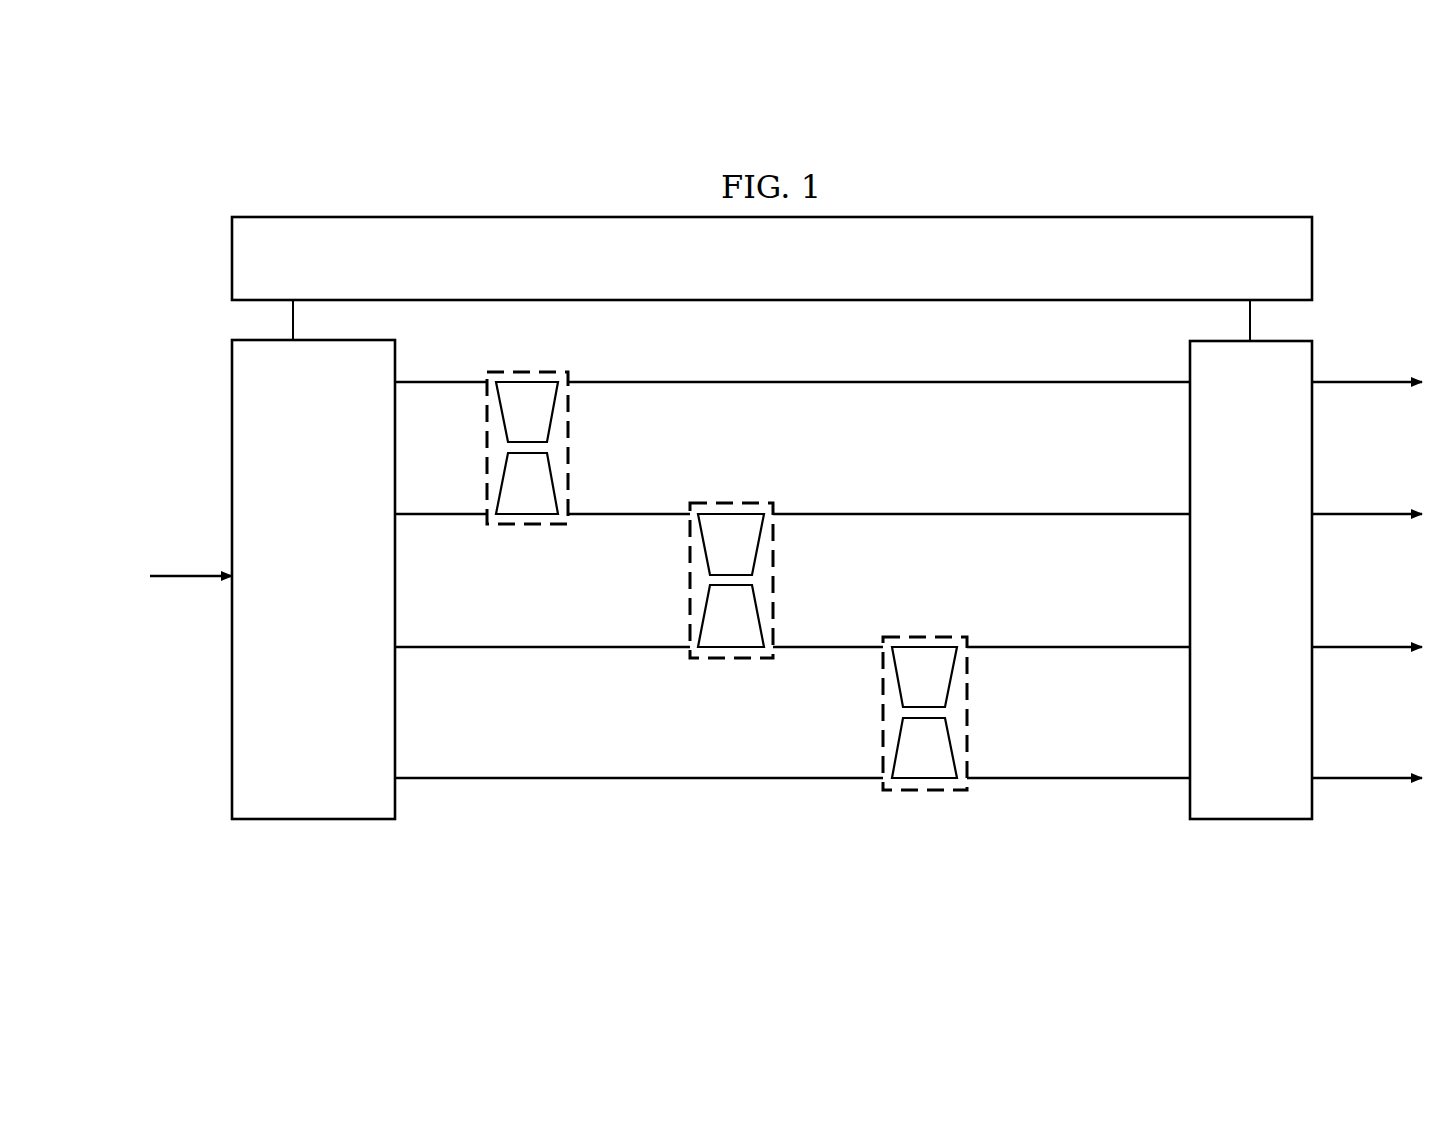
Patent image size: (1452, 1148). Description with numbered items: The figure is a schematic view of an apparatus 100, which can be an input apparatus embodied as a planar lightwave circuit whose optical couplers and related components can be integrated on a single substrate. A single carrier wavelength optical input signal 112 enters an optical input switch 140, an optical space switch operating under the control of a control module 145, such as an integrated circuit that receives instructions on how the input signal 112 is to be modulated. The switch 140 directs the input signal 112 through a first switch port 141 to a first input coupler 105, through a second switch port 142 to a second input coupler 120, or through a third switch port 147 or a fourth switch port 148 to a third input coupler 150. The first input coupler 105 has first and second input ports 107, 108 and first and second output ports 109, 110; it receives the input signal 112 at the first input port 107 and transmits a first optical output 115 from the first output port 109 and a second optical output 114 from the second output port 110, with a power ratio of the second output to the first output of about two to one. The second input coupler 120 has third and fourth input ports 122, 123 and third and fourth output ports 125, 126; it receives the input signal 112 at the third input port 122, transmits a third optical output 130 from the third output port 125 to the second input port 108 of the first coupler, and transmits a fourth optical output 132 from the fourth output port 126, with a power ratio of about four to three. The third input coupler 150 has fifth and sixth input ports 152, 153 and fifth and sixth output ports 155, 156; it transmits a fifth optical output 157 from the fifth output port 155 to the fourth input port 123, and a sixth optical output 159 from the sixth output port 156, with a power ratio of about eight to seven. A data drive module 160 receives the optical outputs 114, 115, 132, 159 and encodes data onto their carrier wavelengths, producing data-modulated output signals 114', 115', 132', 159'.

The apparatus 100 is at (640, 197).
The first input coupler 105 is at (905, 773).
The first input port 107 is at (899, 783).
The second input port 108 is at (899, 640).
The first output port 109 is at (950, 783).
The second output port 110 is at (950, 640).
The optical input signal 112 is at (191, 579).
The second optical output 114 is at (1078, 619).
The data-modulated output signal 114' is at (1367, 653).
The first optical output 115 is at (1078, 751).
The data-modulated output signal 115' is at (1367, 785).
The second input coupler 120 is at (712, 641).
The third input port 122 is at (705, 652).
The fourth input port 123 is at (705, 507).
The third output port 125 is at (757, 652).
The fourth output port 126 is at (755, 507).
The third optical output 130 is at (828, 649).
The fourth optical output 132 is at (981, 487).
The data-modulated output signal 132' is at (1367, 520).
The optical input switch 140 is at (273, 635).
The first switch port 141 is at (392, 774).
The second switch port 142 is at (392, 643).
The control module 145 is at (752, 289).
The third switch port 147 is at (392, 520).
The fourth switch port 148 is at (392, 388).
The third input coupler 150 is at (508, 509).
The fifth input port 152 is at (502, 518).
The sixth input port 153 is at (502, 375).
The fifth output port 155 is at (553, 518).
The sixth output port 156 is at (551, 375).
The fifth optical output 157 is at (640, 516).
The sixth optical output 159 is at (879, 355).
The data-modulated output signal 159' is at (1367, 387).
The data drive module 160 is at (1230, 636).